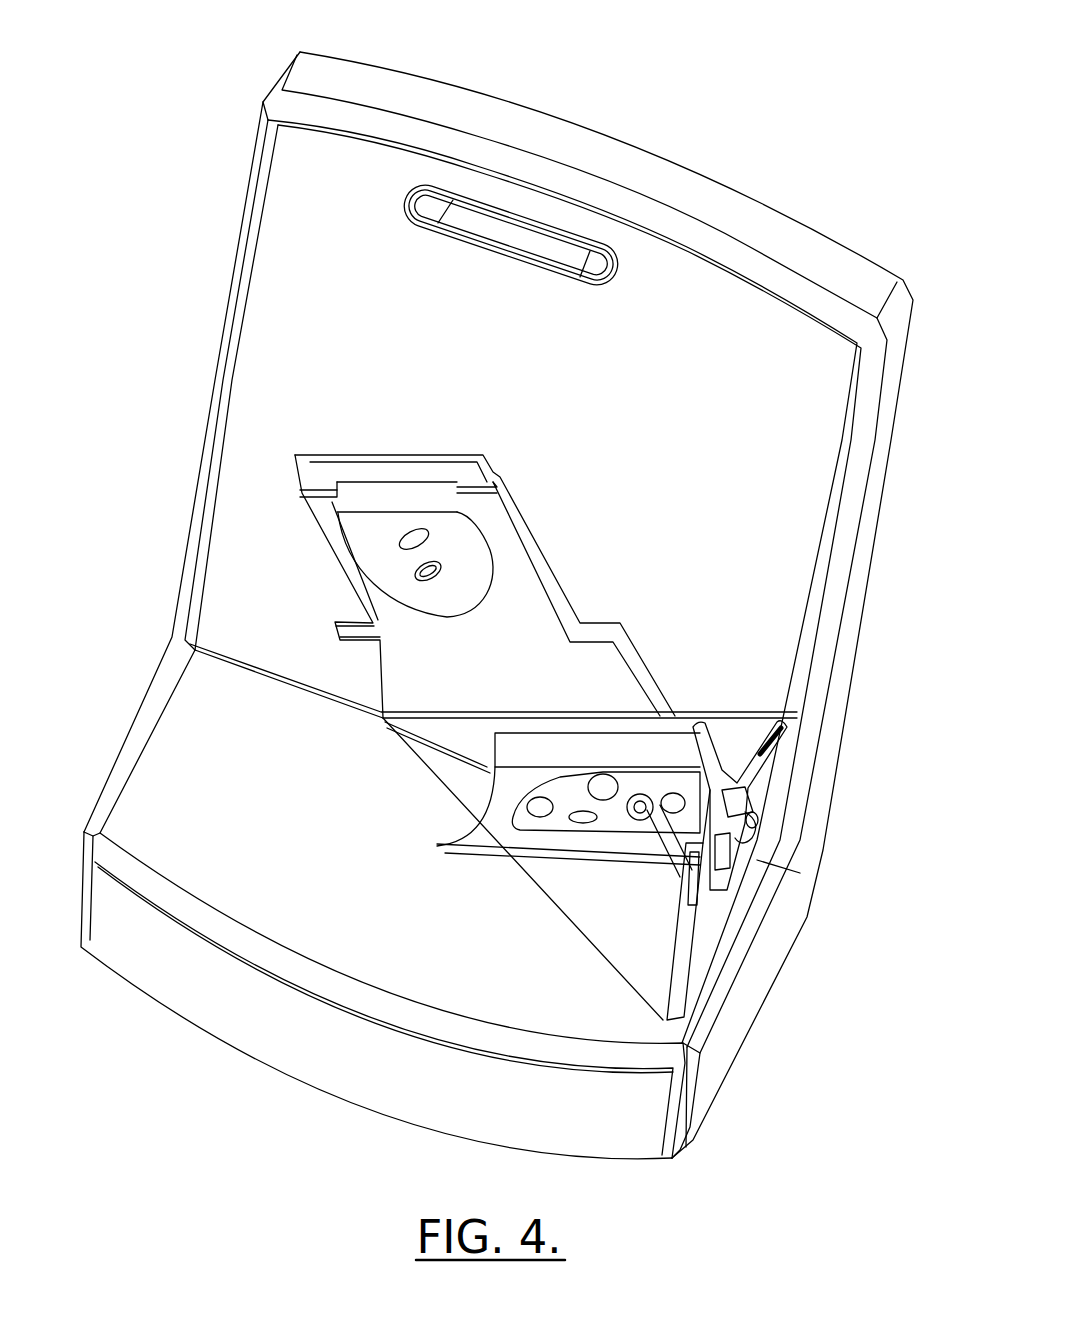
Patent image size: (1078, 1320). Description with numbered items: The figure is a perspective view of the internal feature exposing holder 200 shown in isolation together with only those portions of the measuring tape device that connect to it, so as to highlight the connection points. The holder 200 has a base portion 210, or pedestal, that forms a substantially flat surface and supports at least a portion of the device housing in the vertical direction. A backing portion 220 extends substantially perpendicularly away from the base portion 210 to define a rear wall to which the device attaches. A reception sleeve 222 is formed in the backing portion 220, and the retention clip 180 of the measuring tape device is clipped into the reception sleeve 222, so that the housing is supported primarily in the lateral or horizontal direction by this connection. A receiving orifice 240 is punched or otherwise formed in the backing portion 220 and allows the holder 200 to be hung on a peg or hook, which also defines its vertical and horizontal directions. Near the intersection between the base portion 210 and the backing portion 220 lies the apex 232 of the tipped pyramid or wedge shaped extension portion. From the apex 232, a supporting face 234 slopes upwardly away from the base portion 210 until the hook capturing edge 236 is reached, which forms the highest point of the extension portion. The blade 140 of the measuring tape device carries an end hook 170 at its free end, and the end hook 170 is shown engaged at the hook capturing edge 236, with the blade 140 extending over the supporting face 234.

The internal feature exposing holder 200 is at (184, 73).
The backing portion 220 is at (820, 348).
The receiving orifice 240 is at (505, 216).
The base portion 210 is at (190, 1002).
The retention clip 180 is at (410, 487).
The reception sleeve 222 is at (305, 484).
The apex 232 is at (380, 722).
The blade 140 is at (495, 833).
The supporting face 234 is at (743, 734).
The hook capturing edge 236 is at (768, 752).
The end hook 170 is at (751, 819).